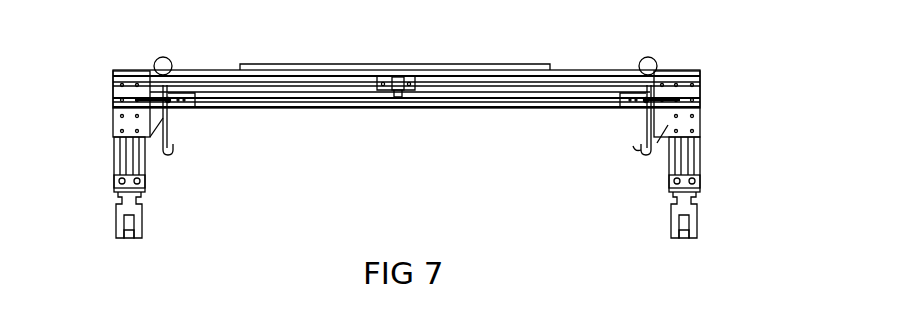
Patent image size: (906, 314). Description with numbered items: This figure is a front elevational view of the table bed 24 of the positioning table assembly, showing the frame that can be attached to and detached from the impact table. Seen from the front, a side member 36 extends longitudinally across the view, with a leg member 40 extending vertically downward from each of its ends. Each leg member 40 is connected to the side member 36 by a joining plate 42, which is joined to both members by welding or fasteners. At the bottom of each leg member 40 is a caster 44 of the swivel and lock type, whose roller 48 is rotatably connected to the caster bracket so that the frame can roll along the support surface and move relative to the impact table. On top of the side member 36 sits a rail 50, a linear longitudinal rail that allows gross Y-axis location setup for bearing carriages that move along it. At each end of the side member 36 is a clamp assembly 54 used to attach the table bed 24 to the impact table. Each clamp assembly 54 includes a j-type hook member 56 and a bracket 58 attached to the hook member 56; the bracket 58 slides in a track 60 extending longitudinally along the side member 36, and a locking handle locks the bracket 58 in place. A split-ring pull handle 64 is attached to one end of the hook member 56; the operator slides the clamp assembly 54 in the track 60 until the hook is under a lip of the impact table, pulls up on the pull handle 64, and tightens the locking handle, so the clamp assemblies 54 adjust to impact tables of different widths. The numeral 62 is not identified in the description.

The table bed 24 is at (712, 95).
The side member 36 is at (555, 94).
The leg member 40 is at (122, 160).
The joining plate 42 is at (118, 103).
The caster 44 is at (142, 208).
The roller 48 is at (129, 226).
The rail 50 is at (150, 68).
The clamp assembly 54 is at (172, 106).
The hook member 56 is at (640, 148).
The bracket 58 is at (634, 94).
The track 60 is at (592, 104).
The bolt 62 is at (660, 100).
The pull handle 64 is at (646, 58).